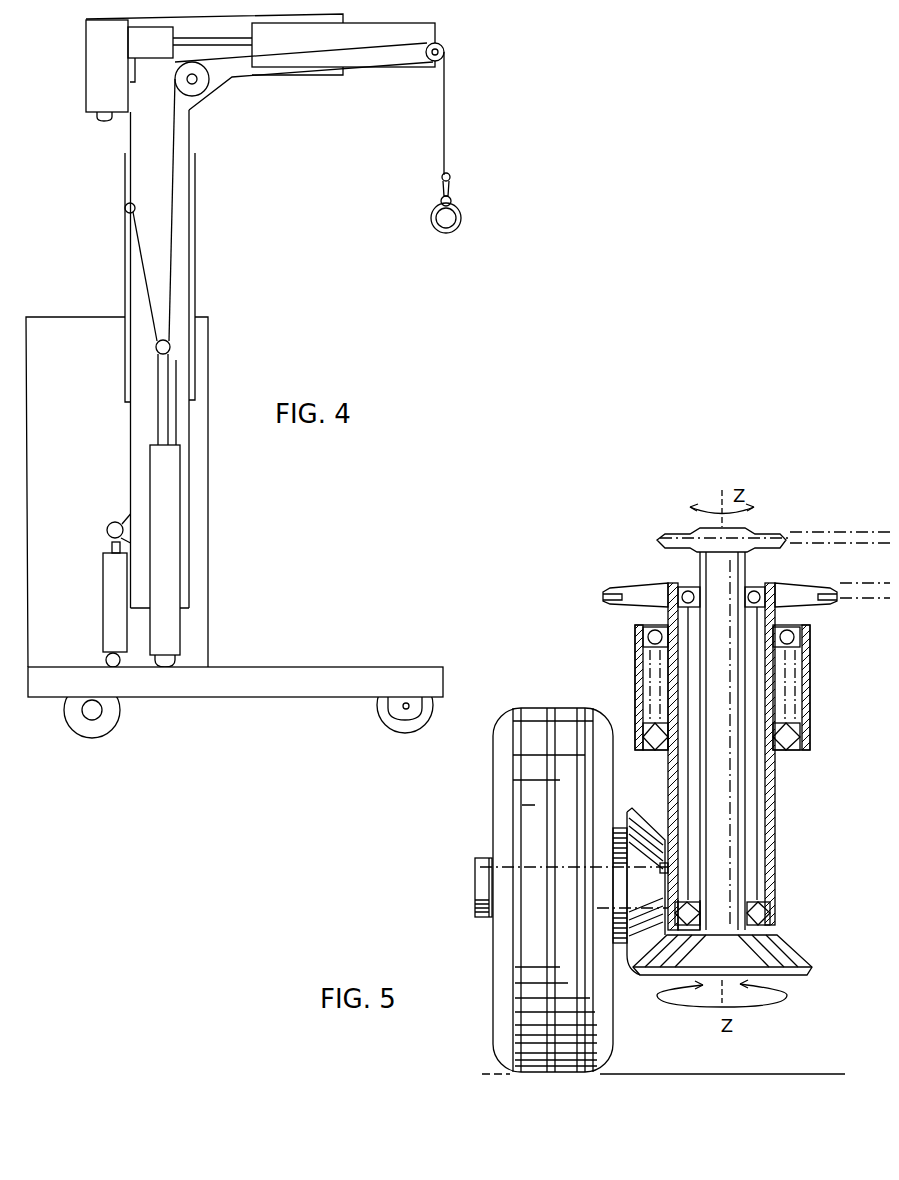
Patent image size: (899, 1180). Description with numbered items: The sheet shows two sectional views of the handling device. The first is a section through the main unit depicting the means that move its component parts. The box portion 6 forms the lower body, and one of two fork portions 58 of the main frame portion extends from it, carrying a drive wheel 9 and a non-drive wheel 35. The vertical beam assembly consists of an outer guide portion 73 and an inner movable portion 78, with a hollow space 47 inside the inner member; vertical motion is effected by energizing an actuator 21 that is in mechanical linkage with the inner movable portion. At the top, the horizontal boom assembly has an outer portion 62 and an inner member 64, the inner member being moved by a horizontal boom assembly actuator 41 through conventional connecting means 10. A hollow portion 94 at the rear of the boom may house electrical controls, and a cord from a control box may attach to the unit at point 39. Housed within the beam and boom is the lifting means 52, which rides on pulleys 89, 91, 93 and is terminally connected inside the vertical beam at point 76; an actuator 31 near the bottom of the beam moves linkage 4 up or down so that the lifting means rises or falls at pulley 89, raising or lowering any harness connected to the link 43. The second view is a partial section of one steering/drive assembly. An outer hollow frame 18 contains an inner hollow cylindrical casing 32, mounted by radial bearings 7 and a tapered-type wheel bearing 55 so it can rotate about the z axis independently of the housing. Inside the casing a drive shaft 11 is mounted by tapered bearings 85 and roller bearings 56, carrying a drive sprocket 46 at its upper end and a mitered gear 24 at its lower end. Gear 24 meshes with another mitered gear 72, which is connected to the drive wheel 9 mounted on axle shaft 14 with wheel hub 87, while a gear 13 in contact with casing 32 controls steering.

In FIG. 4, the conventional linkage 4 is at (155, 391).
In FIG. 4, the box portion 6 is at (68, 338).
In FIG. 5, the radial bearings 7 is at (648, 636).
In FIG. 4, the drive wheel 9 is at (118, 717).
In FIG. 5, the drive wheel 9 is at (540, 715).
In FIG. 4, the conventional connecting means 10 is at (227, 43).
In FIG. 5, the drive shaft 11 is at (715, 568).
In FIG. 5, the gear 13 is at (640, 590).
In FIG. 5, the axle shaft 14 is at (508, 866).
In FIG. 5, the outer hollow frame 18 is at (637, 669).
In FIG. 4, the actuator 21 is at (105, 591).
In FIG. 5, the mitered gear 24 is at (798, 948).
In FIG. 4, the actuator 31 is at (170, 527).
In FIG. 5, the inner hollow cylindrical casing 32 is at (775, 818).
In FIG. 4, the non-drive wheel 35 is at (385, 715).
In FIG. 4, the point 39 is at (97, 118).
In FIG. 4, the horizontal boom assembly actuator 41 is at (148, 45).
In FIG. 4, the link 43 is at (462, 215).
In FIG. 5, the drive sprocket 46 is at (683, 533).
In FIG. 4, the hollow space 47 is at (180, 430).
In FIG. 4, the lifting means 52 is at (448, 128).
In FIG. 5, the tapered-type wheel bearing 55 is at (653, 740).
In FIG. 5, the roller bearings 56 is at (686, 592).
In FIG. 4, the fork portion 58 is at (323, 665).
In FIG. 4, the outer portion of the horizontal boom assembly 62 is at (307, 75).
In FIG. 4, the inner member of the horizontal boom assembly 64 is at (400, 65).
In FIG. 5, the mitered gear 72 is at (645, 826).
In FIG. 4, the outer guide portion 73 is at (196, 240).
In FIG. 4, the point 76 is at (126, 206).
In FIG. 4, the inner movable portion 78 is at (190, 138).
In FIG. 5, the tapered bearings 85 is at (697, 908).
In FIG. 5, the wheel hub 87 is at (483, 918).
In FIG. 4, the pulley 89 is at (447, 53).
In FIG. 4, the pulley 91 is at (197, 85).
In FIG. 4, the pulley 93 is at (156, 348).
In FIG. 4, the hollow portion 94 is at (98, 82).